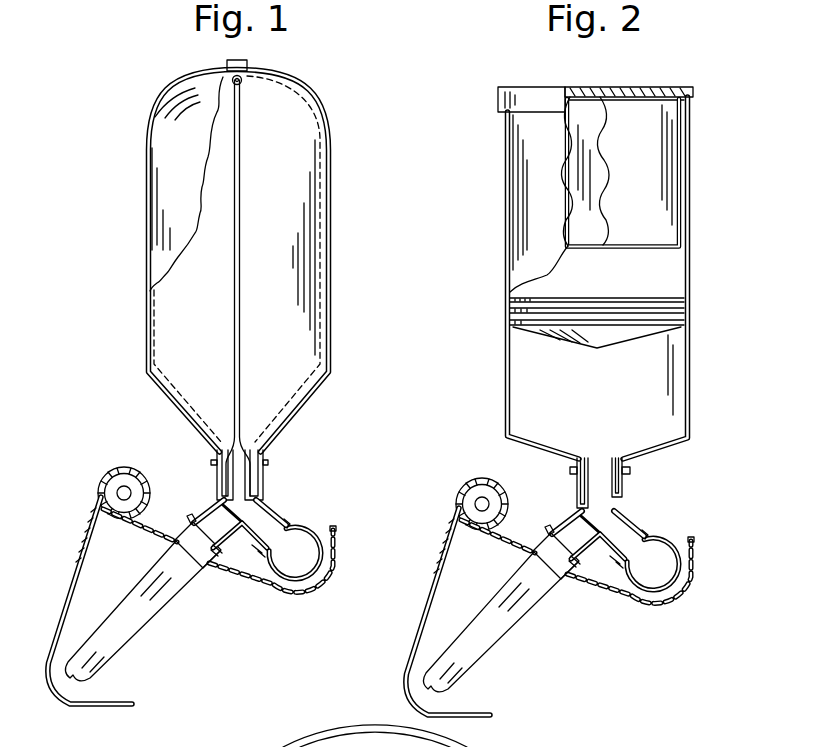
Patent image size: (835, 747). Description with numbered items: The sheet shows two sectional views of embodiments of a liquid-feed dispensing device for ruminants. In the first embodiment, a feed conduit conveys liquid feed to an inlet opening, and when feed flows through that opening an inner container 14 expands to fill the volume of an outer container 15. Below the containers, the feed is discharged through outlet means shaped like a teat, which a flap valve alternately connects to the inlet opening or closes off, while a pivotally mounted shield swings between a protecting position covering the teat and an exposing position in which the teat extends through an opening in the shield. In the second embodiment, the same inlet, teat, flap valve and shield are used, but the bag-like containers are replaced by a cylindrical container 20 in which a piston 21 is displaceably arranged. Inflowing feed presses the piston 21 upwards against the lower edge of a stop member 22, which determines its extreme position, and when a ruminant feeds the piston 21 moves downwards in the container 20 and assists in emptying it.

In FIG. 1, the inner container 14 is at (243, 352).
In FIG. 1, the outer container 15 is at (332, 228).
In FIG. 2, the cylindrical container 20 is at (691, 383).
In FIG. 2, the piston 21 is at (673, 284).
In FIG. 2, the stop member 22 is at (673, 185).